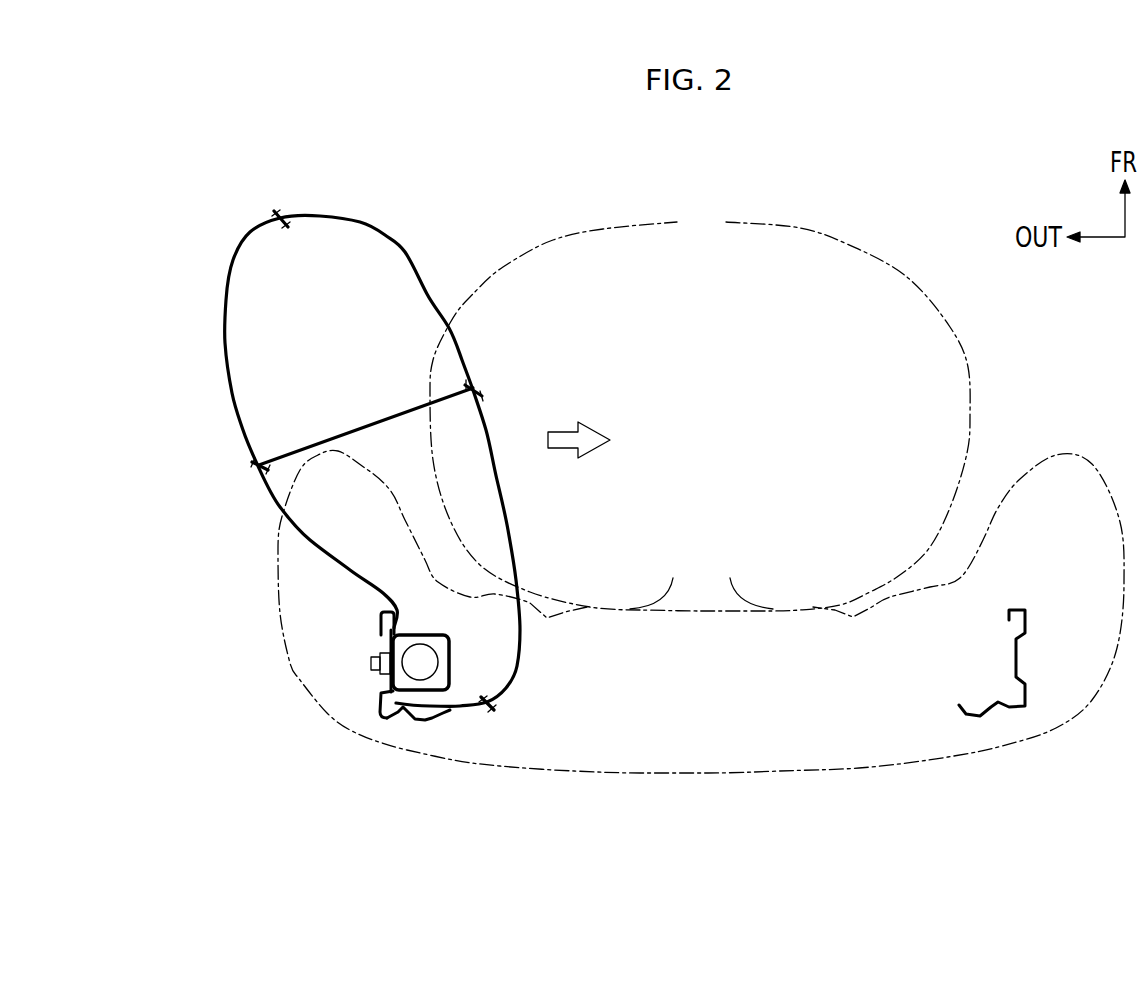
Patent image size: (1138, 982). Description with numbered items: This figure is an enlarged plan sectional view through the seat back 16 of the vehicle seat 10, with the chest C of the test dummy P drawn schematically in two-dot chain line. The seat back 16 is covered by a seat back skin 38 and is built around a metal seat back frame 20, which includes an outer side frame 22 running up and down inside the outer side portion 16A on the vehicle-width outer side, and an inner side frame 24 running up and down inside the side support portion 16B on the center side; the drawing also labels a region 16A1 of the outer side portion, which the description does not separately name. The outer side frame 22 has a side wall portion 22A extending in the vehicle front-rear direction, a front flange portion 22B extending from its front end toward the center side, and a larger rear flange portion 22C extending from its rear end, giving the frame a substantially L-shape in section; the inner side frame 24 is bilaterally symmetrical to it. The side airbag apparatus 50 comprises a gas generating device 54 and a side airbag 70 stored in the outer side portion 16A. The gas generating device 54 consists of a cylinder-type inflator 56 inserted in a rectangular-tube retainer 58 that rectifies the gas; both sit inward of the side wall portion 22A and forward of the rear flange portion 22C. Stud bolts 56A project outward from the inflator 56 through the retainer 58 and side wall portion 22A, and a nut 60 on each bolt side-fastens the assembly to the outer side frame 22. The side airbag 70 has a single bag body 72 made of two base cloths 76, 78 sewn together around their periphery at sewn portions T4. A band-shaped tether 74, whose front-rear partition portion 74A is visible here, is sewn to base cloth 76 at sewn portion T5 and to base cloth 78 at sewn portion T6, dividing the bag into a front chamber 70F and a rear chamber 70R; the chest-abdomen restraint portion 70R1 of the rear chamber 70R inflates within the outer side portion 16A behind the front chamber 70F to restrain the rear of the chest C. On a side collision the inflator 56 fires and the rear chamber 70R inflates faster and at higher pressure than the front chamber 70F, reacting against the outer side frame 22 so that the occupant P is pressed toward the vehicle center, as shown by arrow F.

The vehicle seat 10 is at (698, 616).
The seat back 16 is at (703, 775).
The outer side portion 16A is at (401, 500).
The side portion upper surface 16A1 is at (345, 449).
The side support portion 16B is at (1048, 452).
The seat back frame 20 is at (648, 664).
The outer side frame 22 is at (405, 664).
The side wall portion 22A is at (376, 699).
The front flange portion 22B is at (388, 602).
The rear flange portion 22C is at (428, 724).
The inner side frame 24 is at (1024, 710).
The seat back skin 38 is at (585, 775).
The side airbag apparatus 50 is at (339, 435).
The gas generating device 54 is at (462, 651).
The inflator 56 is at (452, 662).
The stud bolt 56A is at (372, 660).
The retainer 58 is at (420, 636).
The nut 60 is at (378, 648).
The side airbag 70 is at (352, 210).
The front chamber 70F is at (223, 318).
The rear chamber 70R is at (243, 577).
The chest-abdomen restraint portion 70R1 is at (307, 538).
The bag body 72 is at (396, 240).
The tether 74 is at (366, 389).
The front-rear partition portion 74A is at (380, 398).
The base cloth 76 is at (228, 400).
The base cloth 78 is at (430, 268).
The sewn portion T4 is at (278, 217).
The sewn portion T5 is at (254, 465).
The sewn portion T6 is at (480, 386).
The chest C is at (547, 243).
The dummy P is at (700, 380).
The arrow F is at (590, 424).